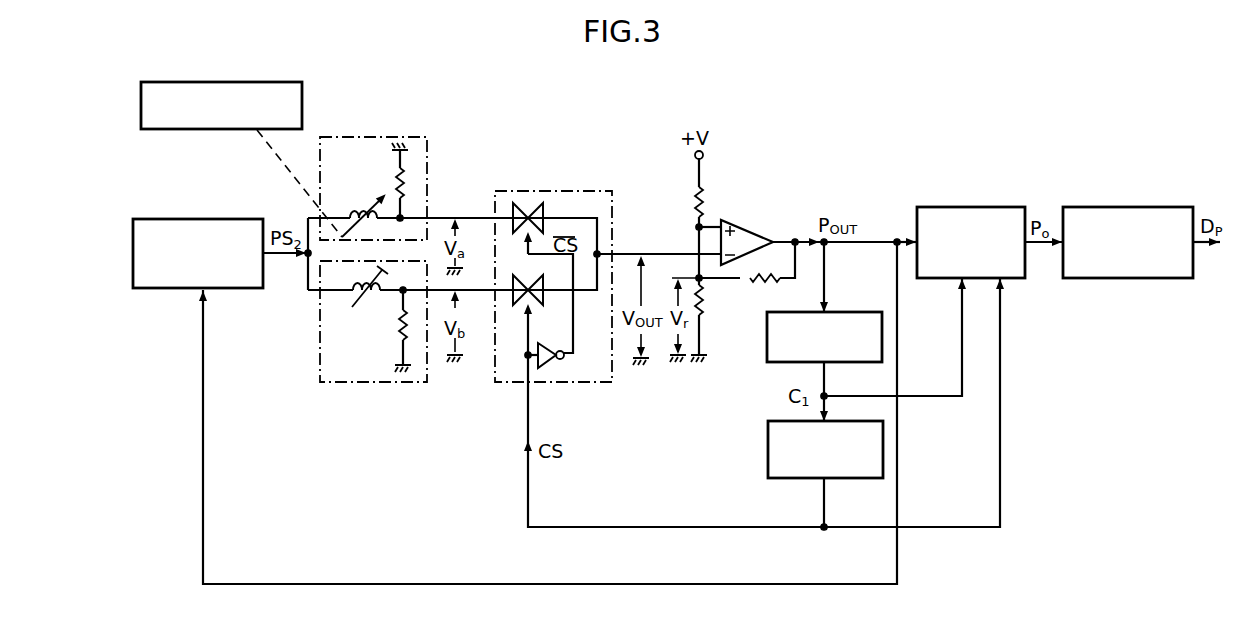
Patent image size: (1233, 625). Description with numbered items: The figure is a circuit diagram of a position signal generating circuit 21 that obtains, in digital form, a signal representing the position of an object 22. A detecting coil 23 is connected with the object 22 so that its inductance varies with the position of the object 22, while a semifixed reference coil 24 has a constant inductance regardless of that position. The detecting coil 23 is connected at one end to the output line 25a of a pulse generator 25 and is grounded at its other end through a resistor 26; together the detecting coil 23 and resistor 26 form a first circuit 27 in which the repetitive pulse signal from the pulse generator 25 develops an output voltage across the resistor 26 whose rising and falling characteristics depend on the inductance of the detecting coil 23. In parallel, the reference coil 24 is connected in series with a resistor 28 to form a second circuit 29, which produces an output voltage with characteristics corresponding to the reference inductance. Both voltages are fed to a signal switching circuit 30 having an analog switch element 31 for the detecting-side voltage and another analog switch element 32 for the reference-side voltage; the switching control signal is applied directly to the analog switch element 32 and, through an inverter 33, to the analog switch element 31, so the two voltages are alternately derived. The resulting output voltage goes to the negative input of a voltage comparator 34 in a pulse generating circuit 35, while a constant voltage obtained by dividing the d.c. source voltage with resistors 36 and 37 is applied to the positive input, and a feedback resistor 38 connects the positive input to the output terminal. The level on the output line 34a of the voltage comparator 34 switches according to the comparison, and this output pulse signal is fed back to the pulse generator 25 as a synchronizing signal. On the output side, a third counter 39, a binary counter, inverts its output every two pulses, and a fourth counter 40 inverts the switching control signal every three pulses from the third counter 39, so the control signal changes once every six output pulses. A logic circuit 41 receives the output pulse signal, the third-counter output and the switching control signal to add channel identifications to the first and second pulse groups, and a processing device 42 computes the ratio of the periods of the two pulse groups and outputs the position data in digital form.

The position signal generating circuit 21 is at (781, 128).
The object 22 is at (213, 82).
The detecting coil 23 is at (360, 210).
The reference coil 24 is at (364, 298).
The pulse generator 25 is at (201, 219).
The output line 25a is at (287, 254).
The resistor 26 is at (390, 183).
The first circuit 27 is at (375, 137).
The resistor 28 is at (394, 331).
The second circuit 29 is at (363, 382).
The signal switching circuit 30 is at (547, 192).
The analog switch element 31 is at (546, 216).
The analog switch element 32 is at (520, 276).
The inverter 33 is at (547, 344).
The voltage comparator 34 is at (748, 227).
The output line 34a is at (783, 241).
The pulse generating circuit 35 is at (782, 198).
The resistor 36 is at (703, 205).
The resistor 37 is at (704, 314).
The feedback resistor 38 is at (756, 283).
The third counter 39 is at (846, 312).
The fourth counter 40 is at (768, 449).
The logic circuit 41 is at (970, 211).
The processing device 42 is at (1121, 207).